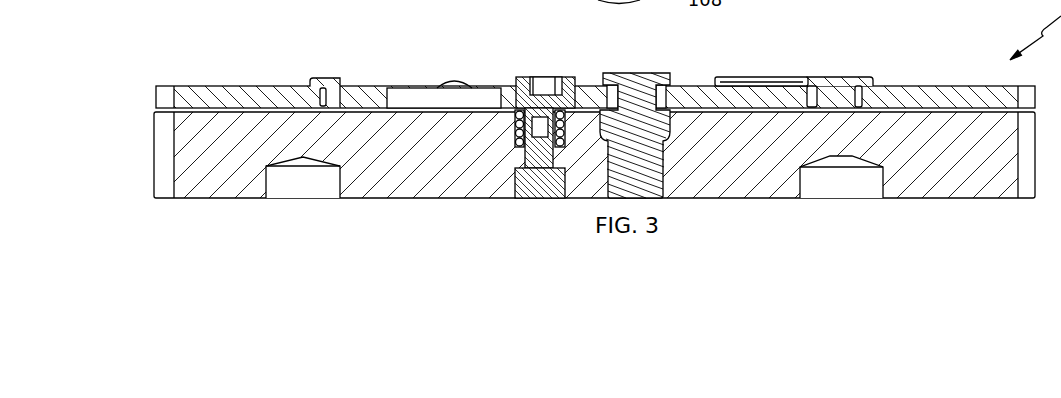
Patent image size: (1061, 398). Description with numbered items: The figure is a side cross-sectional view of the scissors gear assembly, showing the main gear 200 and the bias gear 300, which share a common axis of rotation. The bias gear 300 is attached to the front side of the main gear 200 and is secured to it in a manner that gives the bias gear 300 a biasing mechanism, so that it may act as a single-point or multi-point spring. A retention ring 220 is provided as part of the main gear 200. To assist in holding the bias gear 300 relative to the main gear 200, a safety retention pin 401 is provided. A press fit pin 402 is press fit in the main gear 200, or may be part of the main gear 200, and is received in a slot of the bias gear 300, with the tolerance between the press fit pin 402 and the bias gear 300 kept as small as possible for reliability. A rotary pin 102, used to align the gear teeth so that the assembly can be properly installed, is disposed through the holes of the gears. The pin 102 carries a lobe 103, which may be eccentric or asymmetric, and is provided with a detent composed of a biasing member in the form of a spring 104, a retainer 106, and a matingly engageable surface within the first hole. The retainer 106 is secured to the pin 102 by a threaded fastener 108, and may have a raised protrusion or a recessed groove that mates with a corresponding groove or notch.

The main gear 200 is at (962, 160).
The bias gear 300 is at (903, 85).
The retention ring 220 is at (328, 78).
The press fit pin 402 is at (450, 83).
The rotary pin 102 is at (533, 126).
The lobe 103 is at (577, 82).
The spring 104 is at (515, 128).
The retainer 106 is at (515, 178).
The threaded fastener 108 is at (535, 198).
The safety retention pin 401 is at (645, 73).